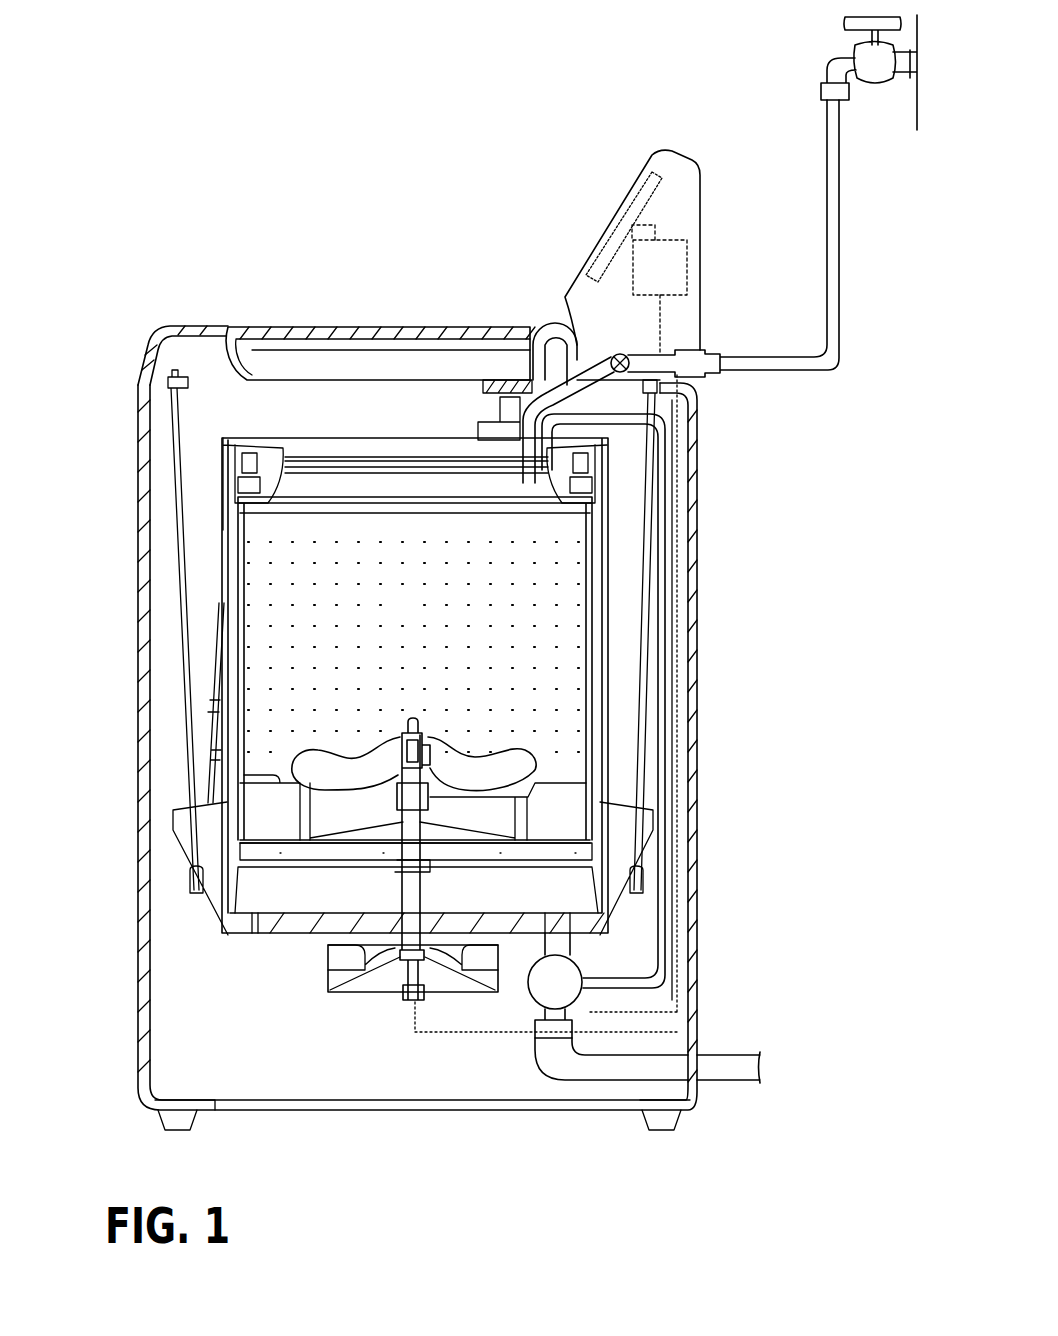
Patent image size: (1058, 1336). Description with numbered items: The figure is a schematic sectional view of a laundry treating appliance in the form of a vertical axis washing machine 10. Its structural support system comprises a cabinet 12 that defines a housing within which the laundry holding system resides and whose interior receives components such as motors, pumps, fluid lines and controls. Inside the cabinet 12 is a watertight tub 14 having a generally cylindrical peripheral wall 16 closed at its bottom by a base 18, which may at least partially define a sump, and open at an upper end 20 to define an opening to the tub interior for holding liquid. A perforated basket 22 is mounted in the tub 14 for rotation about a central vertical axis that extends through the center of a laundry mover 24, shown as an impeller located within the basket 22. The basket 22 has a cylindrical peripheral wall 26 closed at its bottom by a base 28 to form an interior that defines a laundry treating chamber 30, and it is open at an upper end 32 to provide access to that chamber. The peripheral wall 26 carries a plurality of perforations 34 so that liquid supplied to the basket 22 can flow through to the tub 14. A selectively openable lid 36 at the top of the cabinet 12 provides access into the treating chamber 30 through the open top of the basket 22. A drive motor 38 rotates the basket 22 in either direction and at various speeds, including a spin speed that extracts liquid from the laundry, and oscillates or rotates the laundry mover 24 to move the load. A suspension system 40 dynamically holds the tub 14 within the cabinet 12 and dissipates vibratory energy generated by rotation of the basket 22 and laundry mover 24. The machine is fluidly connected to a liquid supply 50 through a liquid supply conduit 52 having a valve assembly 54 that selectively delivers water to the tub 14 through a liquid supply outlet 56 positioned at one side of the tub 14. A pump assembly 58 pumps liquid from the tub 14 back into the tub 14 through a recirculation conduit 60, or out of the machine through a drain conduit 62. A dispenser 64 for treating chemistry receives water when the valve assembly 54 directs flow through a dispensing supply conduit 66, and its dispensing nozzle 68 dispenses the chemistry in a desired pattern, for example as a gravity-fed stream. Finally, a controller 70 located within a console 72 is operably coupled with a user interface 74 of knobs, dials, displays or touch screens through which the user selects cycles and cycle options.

The washing machine 10 is at (131, 378).
The cabinet 12 is at (697, 560).
The tub 14 is at (216, 553).
The peripheral wall 16 is at (220, 578).
The base 18 is at (265, 930).
The upper end 20 is at (240, 478).
The perforated basket 22 is at (236, 645).
The laundry mover 24 is at (487, 772).
The peripheral wall 26 is at (240, 742).
The base 28 is at (533, 787).
The laundry treating chamber 30 is at (415, 618).
The upper end 32 is at (598, 512).
The perforations 34 is at (275, 696).
The lid 36 is at (338, 330).
The drive motor 38 is at (465, 985).
The suspension system 40 is at (190, 893).
The liquid supply 50 is at (878, 70).
The liquid supply conduit 52 is at (742, 358).
The valve assembly 54 is at (614, 360).
The liquid supply outlet 56 is at (540, 520).
The pump assembly 58 is at (548, 985).
The recirculation conduit 60 is at (668, 725).
The drain conduit 62 is at (723, 1065).
The dispenser 64 is at (478, 380).
The dispensing supply conduit 66 is at (560, 358).
The dispensing nozzle 68 is at (420, 440).
The controller 70 is at (660, 248).
The console 72 is at (672, 153).
The user interface 74 is at (628, 182).